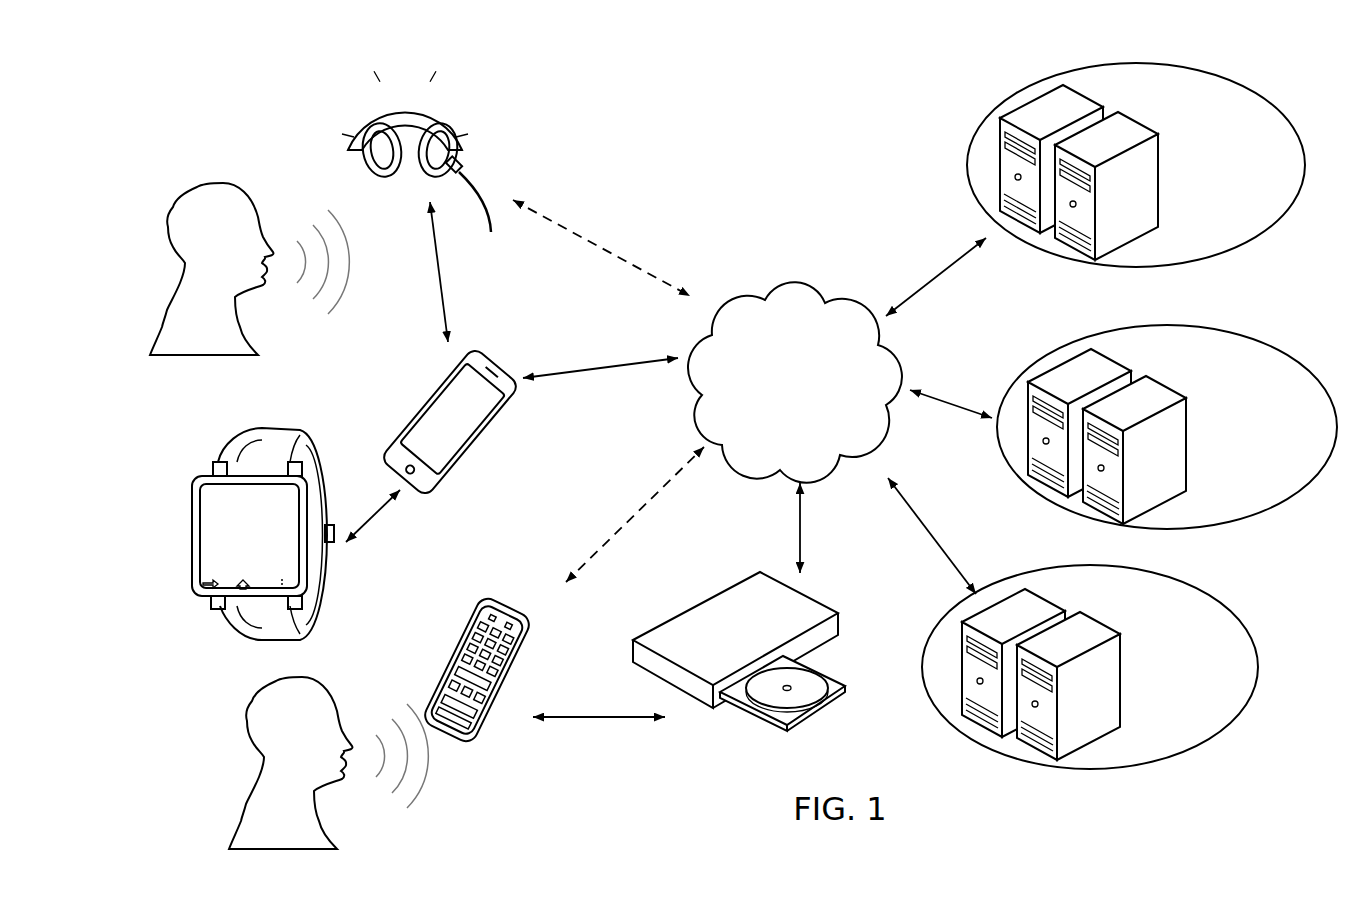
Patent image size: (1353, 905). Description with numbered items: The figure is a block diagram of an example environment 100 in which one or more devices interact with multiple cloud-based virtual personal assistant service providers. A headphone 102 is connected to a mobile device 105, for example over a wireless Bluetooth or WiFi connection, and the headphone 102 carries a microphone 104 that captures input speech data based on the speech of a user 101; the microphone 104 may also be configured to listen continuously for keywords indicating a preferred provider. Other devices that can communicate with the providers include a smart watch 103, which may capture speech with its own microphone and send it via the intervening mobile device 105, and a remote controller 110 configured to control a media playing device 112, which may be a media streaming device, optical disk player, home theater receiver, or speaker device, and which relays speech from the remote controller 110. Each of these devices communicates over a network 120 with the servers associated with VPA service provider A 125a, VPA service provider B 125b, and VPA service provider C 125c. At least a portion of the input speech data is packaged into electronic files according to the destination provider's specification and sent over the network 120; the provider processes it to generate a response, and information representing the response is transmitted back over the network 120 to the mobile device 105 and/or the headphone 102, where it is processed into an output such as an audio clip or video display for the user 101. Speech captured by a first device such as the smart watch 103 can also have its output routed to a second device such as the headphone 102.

The environment 100 is at (767, 151).
The user 101 is at (289, 516).
The headphone 102 is at (349, 122).
The smart watch 103 is at (249, 533).
The microphone 104 is at (482, 205).
The mobile device 105 is at (450, 422).
The remote controller 110 is at (477, 676).
The media playing device 112 is at (739, 661).
The network 120 is at (795, 382).
The VPA service provider A 125a is at (1136, 165).
The VPA service provider B 125b is at (1167, 427).
The VPA service provider C 125c is at (1090, 667).